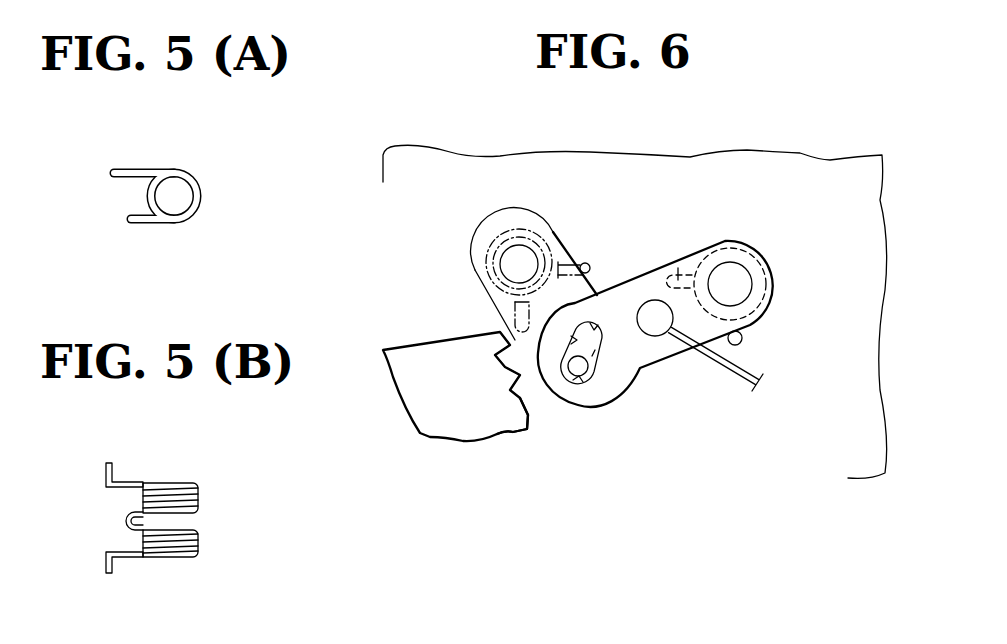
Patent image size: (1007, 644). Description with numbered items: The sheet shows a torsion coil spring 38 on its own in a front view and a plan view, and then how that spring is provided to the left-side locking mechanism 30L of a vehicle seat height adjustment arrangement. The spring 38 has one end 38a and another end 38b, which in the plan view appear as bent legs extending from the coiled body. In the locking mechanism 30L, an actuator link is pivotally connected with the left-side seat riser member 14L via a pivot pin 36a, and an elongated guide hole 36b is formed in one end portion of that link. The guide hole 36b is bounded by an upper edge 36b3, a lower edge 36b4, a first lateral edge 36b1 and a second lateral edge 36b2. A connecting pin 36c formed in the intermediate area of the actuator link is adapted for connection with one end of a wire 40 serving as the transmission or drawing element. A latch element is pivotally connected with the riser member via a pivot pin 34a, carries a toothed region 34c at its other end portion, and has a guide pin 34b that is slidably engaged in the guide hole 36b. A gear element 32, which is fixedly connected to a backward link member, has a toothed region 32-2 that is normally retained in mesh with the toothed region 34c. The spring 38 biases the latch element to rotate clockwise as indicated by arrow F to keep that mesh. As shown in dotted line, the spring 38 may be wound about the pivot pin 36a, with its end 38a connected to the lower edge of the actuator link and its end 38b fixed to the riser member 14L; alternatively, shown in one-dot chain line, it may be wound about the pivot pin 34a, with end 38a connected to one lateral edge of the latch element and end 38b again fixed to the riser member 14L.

In FIG. 6, the left-side seat riser member 14L is at (843, 178).
In FIG. 6, the locking mechanism 30L is at (704, 174).
In FIG. 6, the gear element 32 is at (428, 427).
In FIG. 6, the toothed region 32-2 is at (498, 403).
In FIG. 6, the pivot pin 34a is at (520, 253).
In FIG. 6, the guide pin 34b is at (583, 373).
In FIG. 6, the toothed region 34c is at (498, 362).
In FIG. 6, the pivot pin 36a is at (733, 272).
In FIG. 6, the guide hole 36b is at (603, 343).
In FIG. 6, the first lateral edge 36b1 is at (596, 343).
In FIG. 6, the second lateral edge 36b2 is at (563, 342).
In FIG. 6, the upper edge 36b3 is at (597, 325).
In FIG. 6, the lower edge 36b4 is at (580, 372).
In FIG. 6, the connecting pin 36c is at (660, 332).
In FIG. 6, the torsion coil spring 38 is at (492, 243).
The one end of torsion coil spring 38a is at (103, 477).
In FIG. 6, the one end of torsion coil spring 38a is at (587, 260).
The another end of torsion coil spring 38b is at (103, 563).
In FIG. 6, the another end of torsion coil spring 38b is at (498, 316).
In FIG. 6, the wire 40 is at (747, 363).
In FIG. 6, the arrow F is at (767, 223).